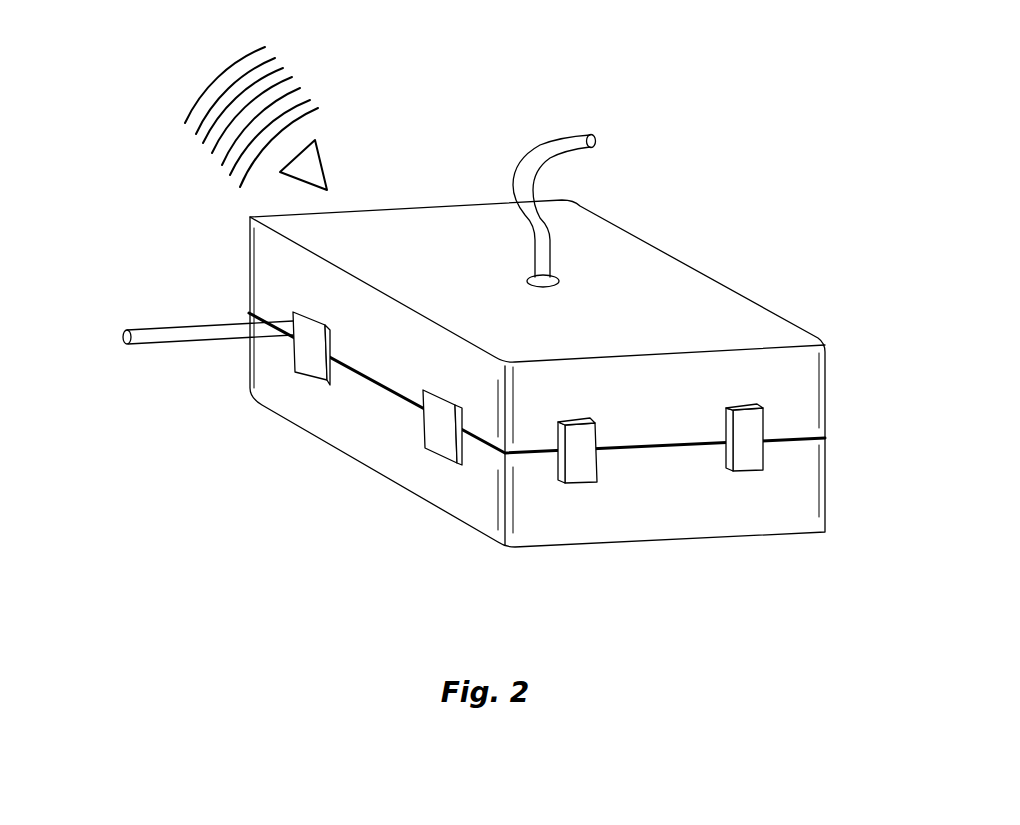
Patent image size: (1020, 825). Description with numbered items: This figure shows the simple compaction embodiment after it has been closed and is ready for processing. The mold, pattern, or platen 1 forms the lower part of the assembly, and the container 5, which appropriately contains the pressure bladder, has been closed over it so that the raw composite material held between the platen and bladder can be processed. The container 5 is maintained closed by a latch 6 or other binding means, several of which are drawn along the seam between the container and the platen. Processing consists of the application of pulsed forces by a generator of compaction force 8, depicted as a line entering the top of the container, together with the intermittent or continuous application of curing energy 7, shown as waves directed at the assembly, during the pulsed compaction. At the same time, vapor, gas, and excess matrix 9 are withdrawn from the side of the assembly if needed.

The platen 1 is at (810, 483).
The container 5 is at (810, 398).
The latch 6 is at (580, 470).
The curing energy 7 is at (210, 102).
The generator of compaction force 8 is at (601, 139).
The excess matrix 9 is at (112, 338).